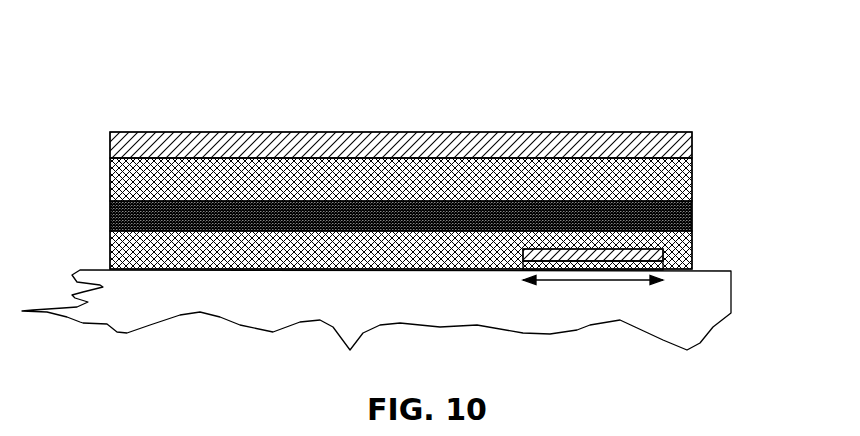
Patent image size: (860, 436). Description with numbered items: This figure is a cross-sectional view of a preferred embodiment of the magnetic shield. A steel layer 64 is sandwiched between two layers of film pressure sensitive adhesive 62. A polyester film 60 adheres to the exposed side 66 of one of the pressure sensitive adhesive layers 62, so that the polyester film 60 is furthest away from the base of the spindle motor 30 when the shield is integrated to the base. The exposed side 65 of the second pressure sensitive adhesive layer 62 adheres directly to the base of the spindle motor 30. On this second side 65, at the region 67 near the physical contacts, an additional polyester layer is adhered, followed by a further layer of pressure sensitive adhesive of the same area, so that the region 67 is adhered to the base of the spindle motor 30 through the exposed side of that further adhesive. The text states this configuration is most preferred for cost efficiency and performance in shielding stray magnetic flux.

The spindle motor 30 is at (273, 298).
The polyester film 60 is at (353, 150).
The film pressure sensitive adhesive 62 is at (670, 181).
The steel layer 64 is at (610, 197).
The exposed side of second pressure sensitive adhesive layer 65 is at (252, 268).
The exposed side of pressure sensitive adhesive layer 66 is at (525, 160).
The region near physical contacts 67 is at (578, 280).